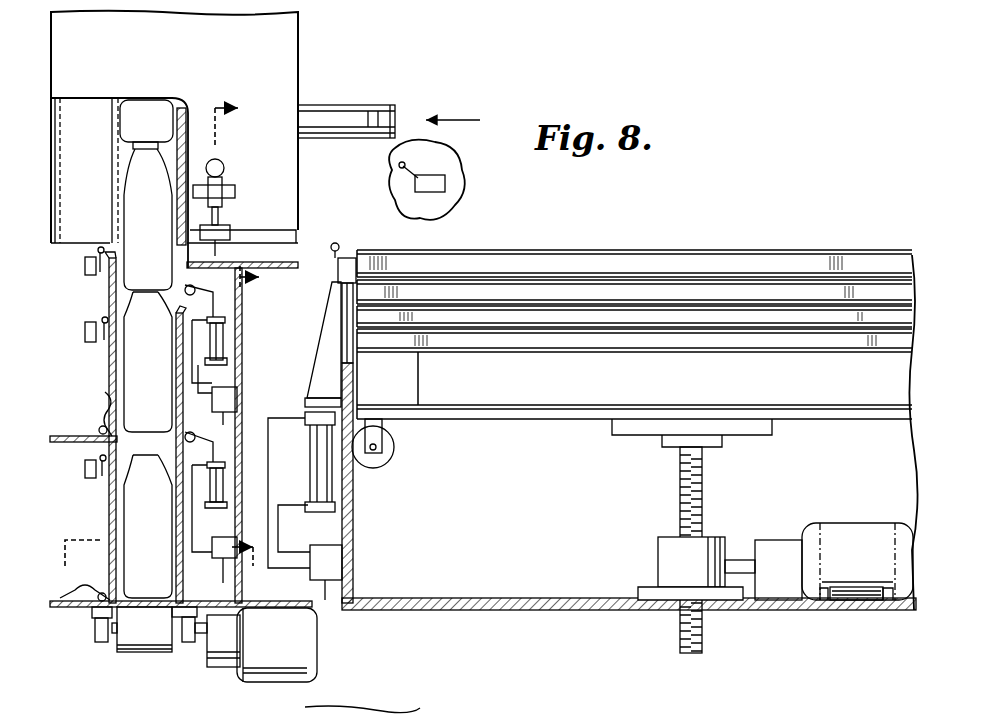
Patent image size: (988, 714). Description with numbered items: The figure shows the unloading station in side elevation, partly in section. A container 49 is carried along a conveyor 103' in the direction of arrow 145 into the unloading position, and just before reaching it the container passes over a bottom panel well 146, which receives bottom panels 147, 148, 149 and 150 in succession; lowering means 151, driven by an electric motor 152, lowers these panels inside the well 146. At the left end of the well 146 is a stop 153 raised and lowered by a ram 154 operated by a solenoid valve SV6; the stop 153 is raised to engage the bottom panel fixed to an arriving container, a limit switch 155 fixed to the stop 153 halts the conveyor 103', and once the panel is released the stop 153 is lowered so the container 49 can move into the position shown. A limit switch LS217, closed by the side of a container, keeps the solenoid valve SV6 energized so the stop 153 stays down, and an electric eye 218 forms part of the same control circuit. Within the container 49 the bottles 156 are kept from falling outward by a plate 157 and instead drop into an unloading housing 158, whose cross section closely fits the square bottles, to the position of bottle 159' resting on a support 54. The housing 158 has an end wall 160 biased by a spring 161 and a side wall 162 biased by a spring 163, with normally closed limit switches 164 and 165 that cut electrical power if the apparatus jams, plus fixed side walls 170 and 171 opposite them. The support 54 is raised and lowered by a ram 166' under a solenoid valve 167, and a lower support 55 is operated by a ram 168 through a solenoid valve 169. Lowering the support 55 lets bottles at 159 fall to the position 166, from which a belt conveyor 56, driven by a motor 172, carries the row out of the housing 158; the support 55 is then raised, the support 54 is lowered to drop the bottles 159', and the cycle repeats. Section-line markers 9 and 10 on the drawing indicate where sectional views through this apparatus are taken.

The container 49 is at (303, 158).
The conveyor 103' is at (356, 96).
The arrow 145 is at (458, 119).
The limit switch LS217 is at (455, 196).
The bottom panel well 146 is at (540, 566).
The bottom panel 147 is at (588, 253).
The bottom panel 148 is at (585, 281).
The bottom panel 149 is at (585, 306).
The bottom panel 150 is at (585, 330).
The lowering means 151 is at (667, 492).
The electric motor 152 is at (853, 524).
The stop 153 is at (323, 337).
The ram 154 is at (309, 448).
The limit switch 155 is at (88, 276).
The bottles 156 is at (262, 243).
The plate 157 is at (336, 250).
The unloading housing 158 is at (108, 355).
The bottles 159 is at (89, 319).
The bottle 159' is at (97, 171).
The end wall 160 is at (108, 393).
The spring 161 is at (105, 424).
The side wall 162 is at (108, 492).
The spring 163 is at (66, 607).
The limit switch 164 is at (85, 333).
The limit switch 165 is at (75, 481).
The bottles 166 is at (121, 637).
The ram 166' is at (243, 339).
The solenoid valve 167 is at (222, 385).
The ram 168 is at (218, 485).
The solenoid valve 169 is at (217, 546).
The fixed side wall 170 is at (180, 345).
The fixed side wall 171 is at (178, 505).
The motor 172 is at (318, 637).
The electric eye 218 is at (152, 242).
The support 54 is at (178, 300).
The support 55 is at (163, 462).
The belt conveyor 56 is at (160, 659).
The solenoid valve SV6 is at (342, 546).
The section line 10 is at (252, 208).
The section line 9 is at (162, 574).